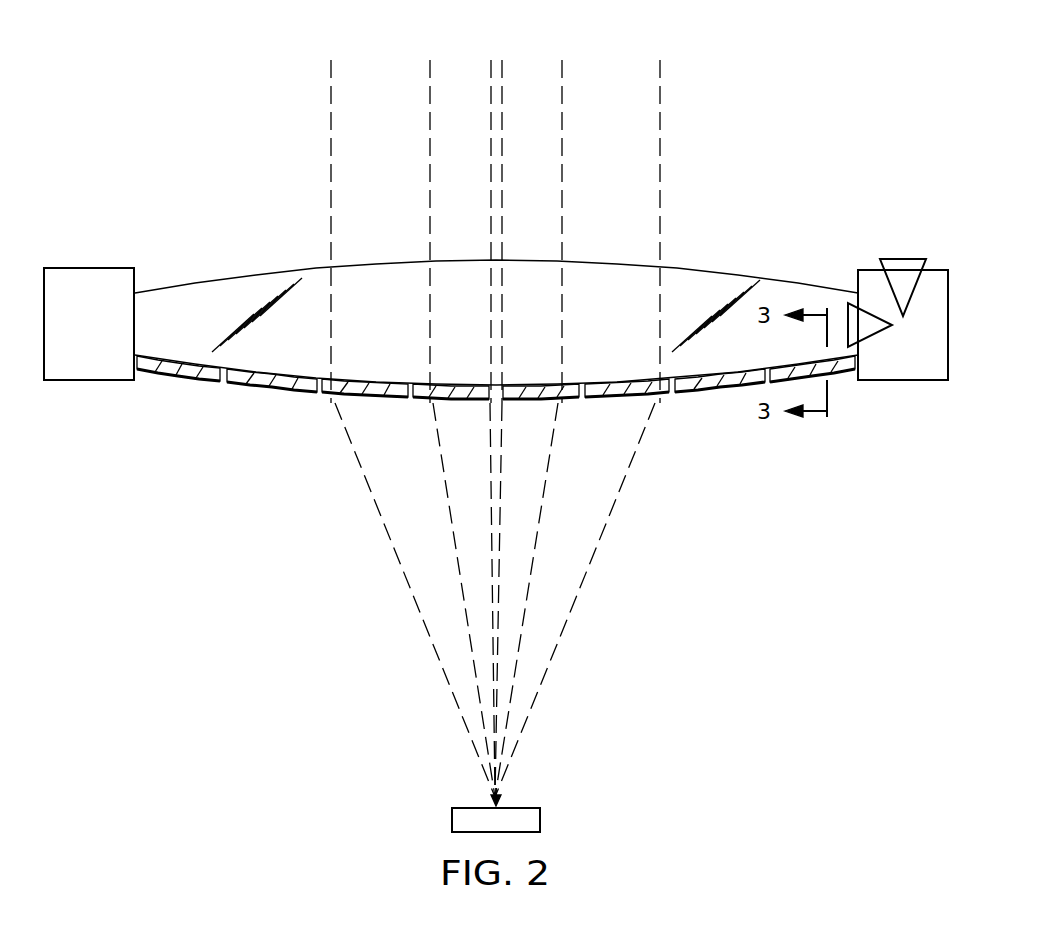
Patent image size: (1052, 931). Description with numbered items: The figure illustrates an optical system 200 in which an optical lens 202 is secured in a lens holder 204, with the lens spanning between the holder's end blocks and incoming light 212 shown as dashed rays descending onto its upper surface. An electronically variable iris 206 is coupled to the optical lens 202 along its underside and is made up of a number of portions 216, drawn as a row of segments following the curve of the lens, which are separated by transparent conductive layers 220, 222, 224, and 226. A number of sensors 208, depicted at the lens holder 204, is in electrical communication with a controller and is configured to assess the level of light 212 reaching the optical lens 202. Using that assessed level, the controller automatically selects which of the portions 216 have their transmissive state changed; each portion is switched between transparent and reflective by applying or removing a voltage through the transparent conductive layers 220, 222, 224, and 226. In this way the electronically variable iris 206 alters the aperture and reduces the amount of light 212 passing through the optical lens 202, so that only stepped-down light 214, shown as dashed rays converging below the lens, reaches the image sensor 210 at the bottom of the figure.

The optical system 200 is at (189, 63).
The optical lens 202 is at (757, 276).
The lens holder 204 is at (898, 319).
The electronically variable iris 206 is at (706, 392).
The number of sensors 208 is at (900, 258).
The image sensor 210 is at (540, 820).
The light 212 is at (652, 174).
The stepped-down light 214 is at (588, 584).
The number of portions 216 is at (496, 437).
The transparent conductive layer 220 is at (178, 374).
The transparent conductive layer 222 is at (270, 394).
The transparent conductive layer 224 is at (375, 401).
The transparent conductive layer 226 is at (467, 401).